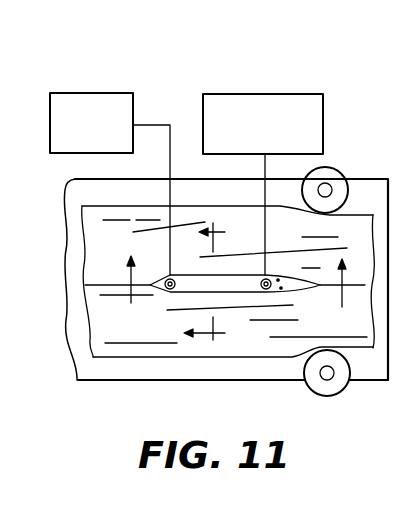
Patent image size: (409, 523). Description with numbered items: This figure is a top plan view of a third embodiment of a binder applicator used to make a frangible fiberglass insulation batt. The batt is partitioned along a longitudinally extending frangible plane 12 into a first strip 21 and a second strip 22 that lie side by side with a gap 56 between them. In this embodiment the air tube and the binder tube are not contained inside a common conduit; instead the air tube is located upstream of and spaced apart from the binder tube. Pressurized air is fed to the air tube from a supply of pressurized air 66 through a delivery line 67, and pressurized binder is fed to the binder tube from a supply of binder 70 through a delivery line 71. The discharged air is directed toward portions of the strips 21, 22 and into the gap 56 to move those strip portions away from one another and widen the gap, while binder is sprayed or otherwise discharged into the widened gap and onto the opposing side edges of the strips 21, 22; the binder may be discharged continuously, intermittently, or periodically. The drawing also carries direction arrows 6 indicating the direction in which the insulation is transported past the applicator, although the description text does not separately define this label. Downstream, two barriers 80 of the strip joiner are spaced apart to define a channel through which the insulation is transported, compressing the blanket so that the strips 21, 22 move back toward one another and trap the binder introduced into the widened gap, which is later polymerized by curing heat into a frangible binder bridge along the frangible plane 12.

The supply of pressurized air 66 is at (57, 122).
The delivery line 67 is at (147, 123).
The supply of binder 70 is at (323, 117).
The delivery line 71 is at (263, 165).
The barriers 80 is at (343, 168).
The second strip 22 is at (90, 225).
The first strip 21 is at (110, 348).
The gap 56 is at (100, 280).
The machine direction arrow 6 is at (215, 285).
The frangible plane 12 is at (237, 295).